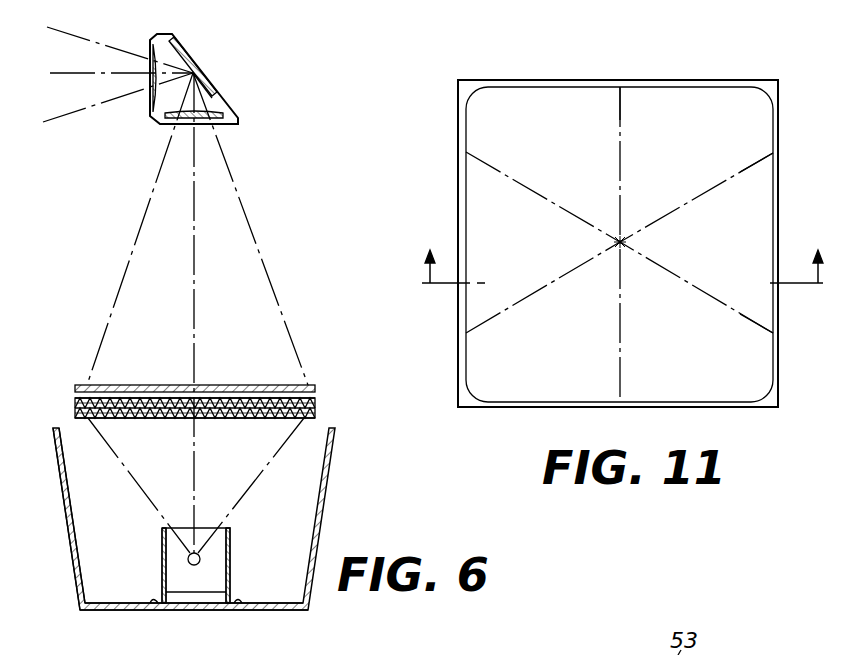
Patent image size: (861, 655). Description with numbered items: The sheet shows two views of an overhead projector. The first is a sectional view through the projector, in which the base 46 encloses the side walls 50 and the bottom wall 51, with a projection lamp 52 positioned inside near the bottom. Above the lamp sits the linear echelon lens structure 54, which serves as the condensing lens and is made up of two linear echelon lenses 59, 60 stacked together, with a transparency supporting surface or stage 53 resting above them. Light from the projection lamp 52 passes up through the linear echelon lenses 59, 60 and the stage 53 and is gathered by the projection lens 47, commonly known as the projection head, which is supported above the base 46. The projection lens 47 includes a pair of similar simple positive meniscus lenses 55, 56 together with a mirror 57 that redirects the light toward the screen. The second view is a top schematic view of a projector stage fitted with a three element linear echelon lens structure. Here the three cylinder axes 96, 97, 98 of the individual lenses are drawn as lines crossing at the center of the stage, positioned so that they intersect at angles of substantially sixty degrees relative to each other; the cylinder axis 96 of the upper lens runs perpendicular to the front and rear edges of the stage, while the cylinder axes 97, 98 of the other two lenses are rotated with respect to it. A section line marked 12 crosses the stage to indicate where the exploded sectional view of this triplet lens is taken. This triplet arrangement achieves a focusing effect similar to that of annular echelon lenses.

In FIG. 6, the base 46 is at (326, 506).
In FIG. 6, the projection lens 47 is at (187, 51).
In FIG. 6, the side walls 50 is at (68, 513).
In FIG. 6, the bottom wall 51 is at (115, 612).
In FIG. 6, the projection lamp 52 is at (201, 557).
In FIG. 6, the transparency supporting surface or stage 53 is at (314, 386).
In FIG. 6, the linear echelon lens structure 54 is at (316, 406).
In FIG. 6, the positive meniscus lens 55 is at (227, 122).
In FIG. 6, the positive meniscus lens 56 is at (151, 56).
In FIG. 6, the mirror 57 is at (196, 73).
In FIG. 6, the linear echelon lens 59 is at (78, 399).
In FIG. 6, the linear echelon lens 60 is at (78, 416).
In FIG. 11, the section line 12 is at (625, 288).
In FIG. 11, the cylinder axis 96 is at (619, 100).
In FIG. 11, the cylinder axis 97 is at (765, 152).
In FIG. 11, the cylinder axis 98 is at (762, 328).